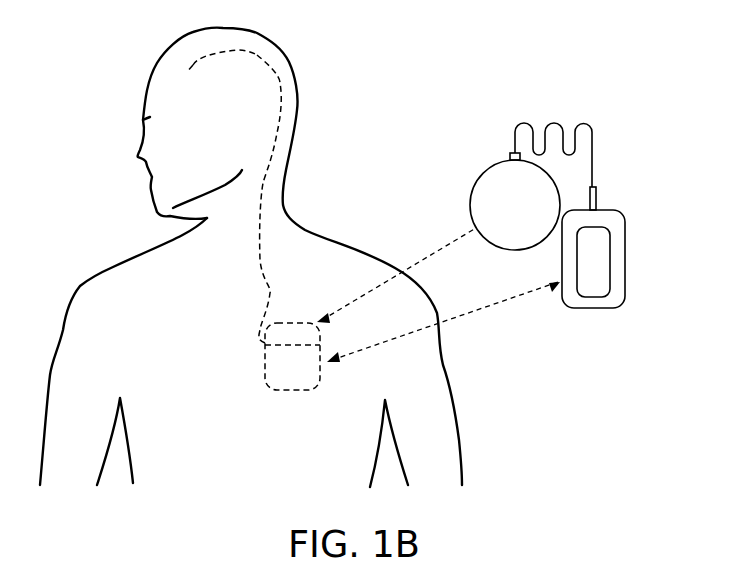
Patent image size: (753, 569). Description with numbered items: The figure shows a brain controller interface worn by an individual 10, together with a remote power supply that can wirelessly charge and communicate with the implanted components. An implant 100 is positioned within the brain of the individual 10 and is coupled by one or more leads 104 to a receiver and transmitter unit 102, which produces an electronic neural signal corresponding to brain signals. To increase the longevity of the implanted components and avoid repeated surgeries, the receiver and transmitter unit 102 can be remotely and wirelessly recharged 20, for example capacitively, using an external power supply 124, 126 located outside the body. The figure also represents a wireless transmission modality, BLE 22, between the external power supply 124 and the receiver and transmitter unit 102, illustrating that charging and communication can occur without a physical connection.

The individual 10 is at (78, 288).
The implant 100 is at (193, 65).
The lead 104 is at (257, 55).
The receiver and transmitter unit 102 is at (302, 378).
The wireless recharging 20 is at (430, 258).
The BLE 22 is at (447, 320).
The external power supply 126 is at (482, 198).
The external power supply 124 is at (617, 267).